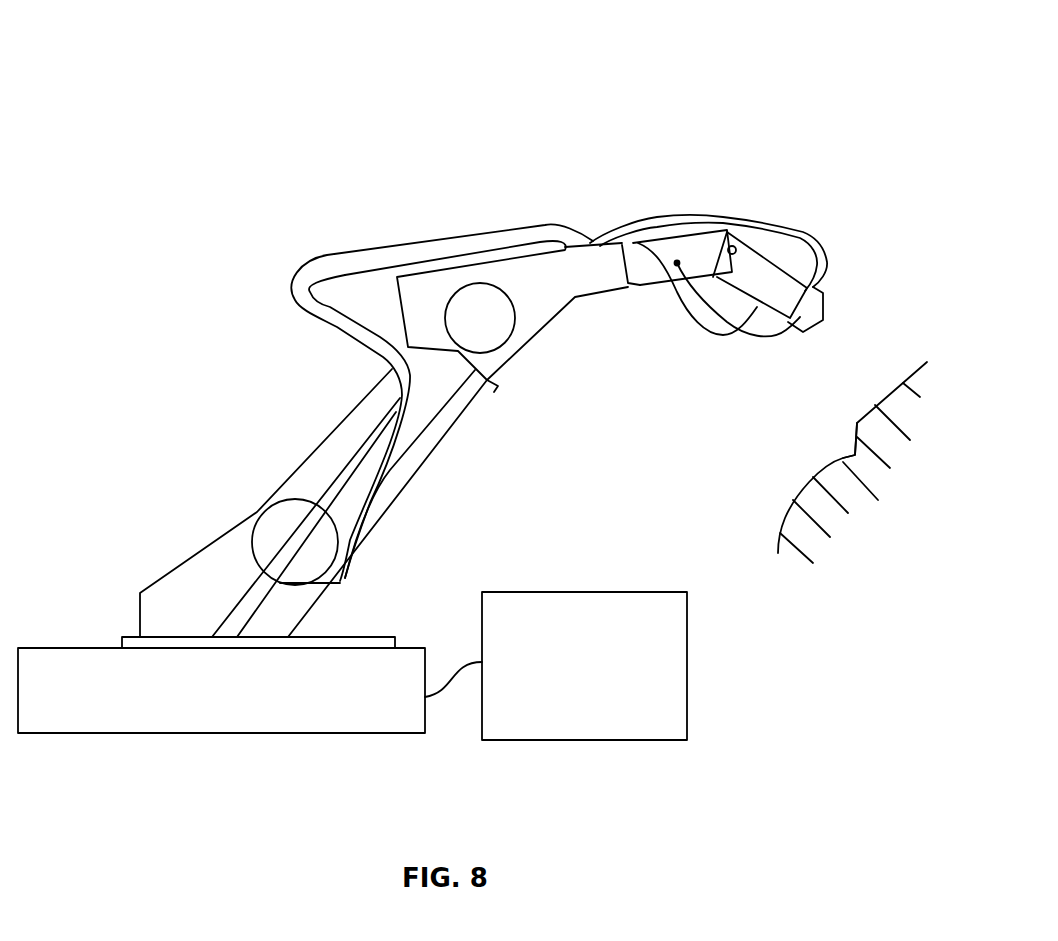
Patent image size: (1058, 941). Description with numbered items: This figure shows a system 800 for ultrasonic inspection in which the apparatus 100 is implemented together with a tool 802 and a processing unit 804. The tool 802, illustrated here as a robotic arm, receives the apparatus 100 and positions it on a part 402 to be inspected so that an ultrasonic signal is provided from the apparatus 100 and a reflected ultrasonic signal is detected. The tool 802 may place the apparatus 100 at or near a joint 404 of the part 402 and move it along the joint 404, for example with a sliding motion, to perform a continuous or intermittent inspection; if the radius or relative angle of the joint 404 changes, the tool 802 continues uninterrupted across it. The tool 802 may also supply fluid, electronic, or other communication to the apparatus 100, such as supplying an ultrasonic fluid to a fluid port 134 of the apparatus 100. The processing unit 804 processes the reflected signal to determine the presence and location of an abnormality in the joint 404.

The system 800 is at (177, 73).
The tool 802 is at (338, 421).
The processing unit 804 is at (688, 650).
The apparatus 100 is at (822, 323).
The fluid port 134 is at (815, 286).
The part 402 is at (781, 523).
The joint 404 is at (852, 457).